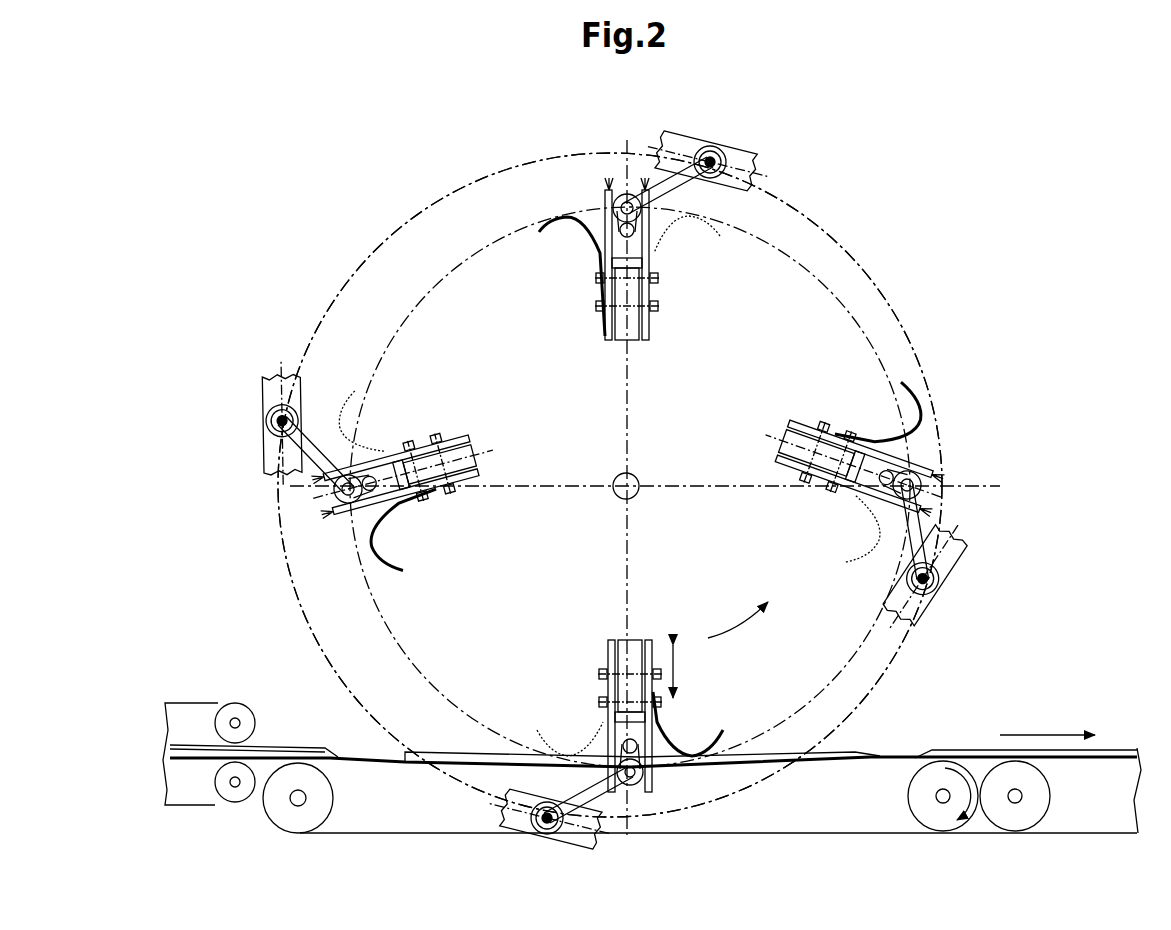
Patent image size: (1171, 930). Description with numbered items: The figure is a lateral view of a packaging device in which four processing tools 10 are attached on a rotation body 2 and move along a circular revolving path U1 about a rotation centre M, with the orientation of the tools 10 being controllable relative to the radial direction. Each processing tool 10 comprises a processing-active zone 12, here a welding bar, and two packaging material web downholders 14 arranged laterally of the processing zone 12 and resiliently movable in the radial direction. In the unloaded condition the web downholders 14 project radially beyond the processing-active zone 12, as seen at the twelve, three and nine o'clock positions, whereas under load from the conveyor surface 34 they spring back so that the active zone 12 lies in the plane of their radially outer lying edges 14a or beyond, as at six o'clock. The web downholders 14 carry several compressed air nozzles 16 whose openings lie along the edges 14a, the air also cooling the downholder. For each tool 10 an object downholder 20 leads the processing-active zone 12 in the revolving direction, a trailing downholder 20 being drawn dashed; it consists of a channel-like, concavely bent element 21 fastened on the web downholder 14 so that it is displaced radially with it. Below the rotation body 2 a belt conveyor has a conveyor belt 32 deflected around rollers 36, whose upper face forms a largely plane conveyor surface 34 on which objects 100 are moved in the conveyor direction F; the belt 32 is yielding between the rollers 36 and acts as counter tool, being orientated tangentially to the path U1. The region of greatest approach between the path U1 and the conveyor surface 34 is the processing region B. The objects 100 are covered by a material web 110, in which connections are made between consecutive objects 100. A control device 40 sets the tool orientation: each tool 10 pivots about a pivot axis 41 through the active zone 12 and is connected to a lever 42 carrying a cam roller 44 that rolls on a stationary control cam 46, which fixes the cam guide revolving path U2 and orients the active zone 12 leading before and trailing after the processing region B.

The rotation body 2 is at (845, 333).
The processing tool 10 is at (332, 505).
The processing-active zone 12 is at (933, 475).
The packaging material web downholder 14 is at (915, 470).
The radially outer lying edge 14a is at (337, 527).
The compressed air nozzle 16 is at (338, 482).
The object downholder 20 is at (912, 385).
The element 21 is at (700, 742).
The conveyor belt 32 is at (808, 838).
The conveyor surface 34 is at (883, 762).
The roller 36 is at (940, 818).
The control device 40 is at (245, 414).
The pivot axis 41 is at (305, 518).
The lever 42 is at (310, 450).
The cam roller 44 is at (283, 420).
The control cam 46 is at (283, 385).
The object 100 is at (182, 752).
The material web 110 is at (340, 748).
The rotation centre M is at (641, 477).
The processing region B is at (655, 794).
The conveyor direction F is at (1062, 735).
The circular revolving path U1 is at (413, 303).
The cam guide revolving path U2 is at (403, 220).